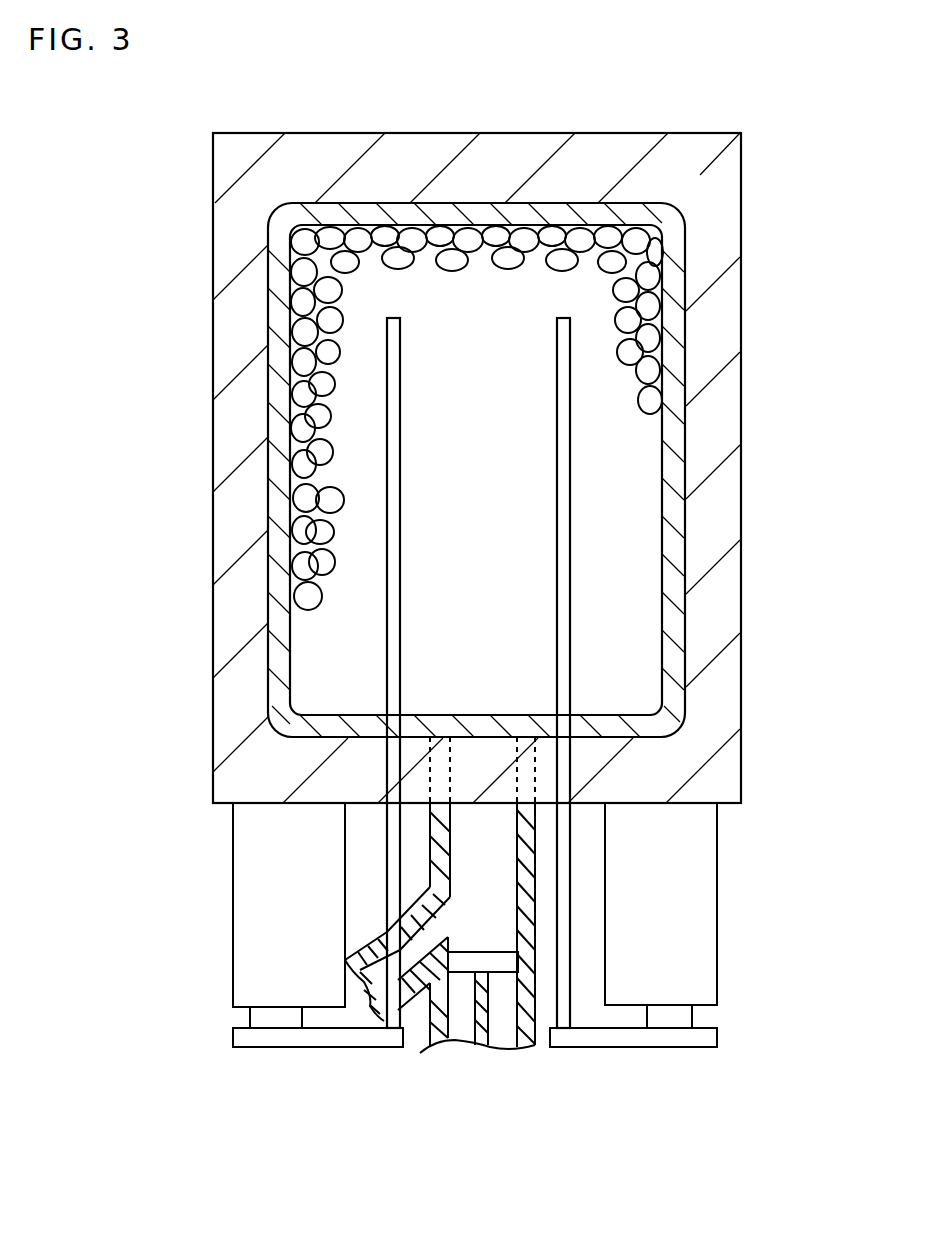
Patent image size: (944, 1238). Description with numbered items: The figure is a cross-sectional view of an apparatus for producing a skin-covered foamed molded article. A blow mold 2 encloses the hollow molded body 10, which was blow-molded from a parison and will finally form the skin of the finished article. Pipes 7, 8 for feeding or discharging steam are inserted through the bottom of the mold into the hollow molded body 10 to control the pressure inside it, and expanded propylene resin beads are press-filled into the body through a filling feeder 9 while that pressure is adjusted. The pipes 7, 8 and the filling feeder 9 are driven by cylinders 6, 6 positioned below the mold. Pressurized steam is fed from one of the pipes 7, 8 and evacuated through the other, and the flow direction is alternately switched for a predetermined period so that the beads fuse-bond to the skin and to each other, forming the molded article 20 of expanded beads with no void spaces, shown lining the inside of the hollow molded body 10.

The blow mold 2 is at (730, 203).
The hollow molded body 10 is at (670, 525).
The molded article of the expanded beads 20 is at (298, 343).
The cylinder 6 is at (257, 895).
The pipe 7 is at (385, 915).
The pipe 8 is at (568, 950).
The filling feeder 9 is at (443, 838).